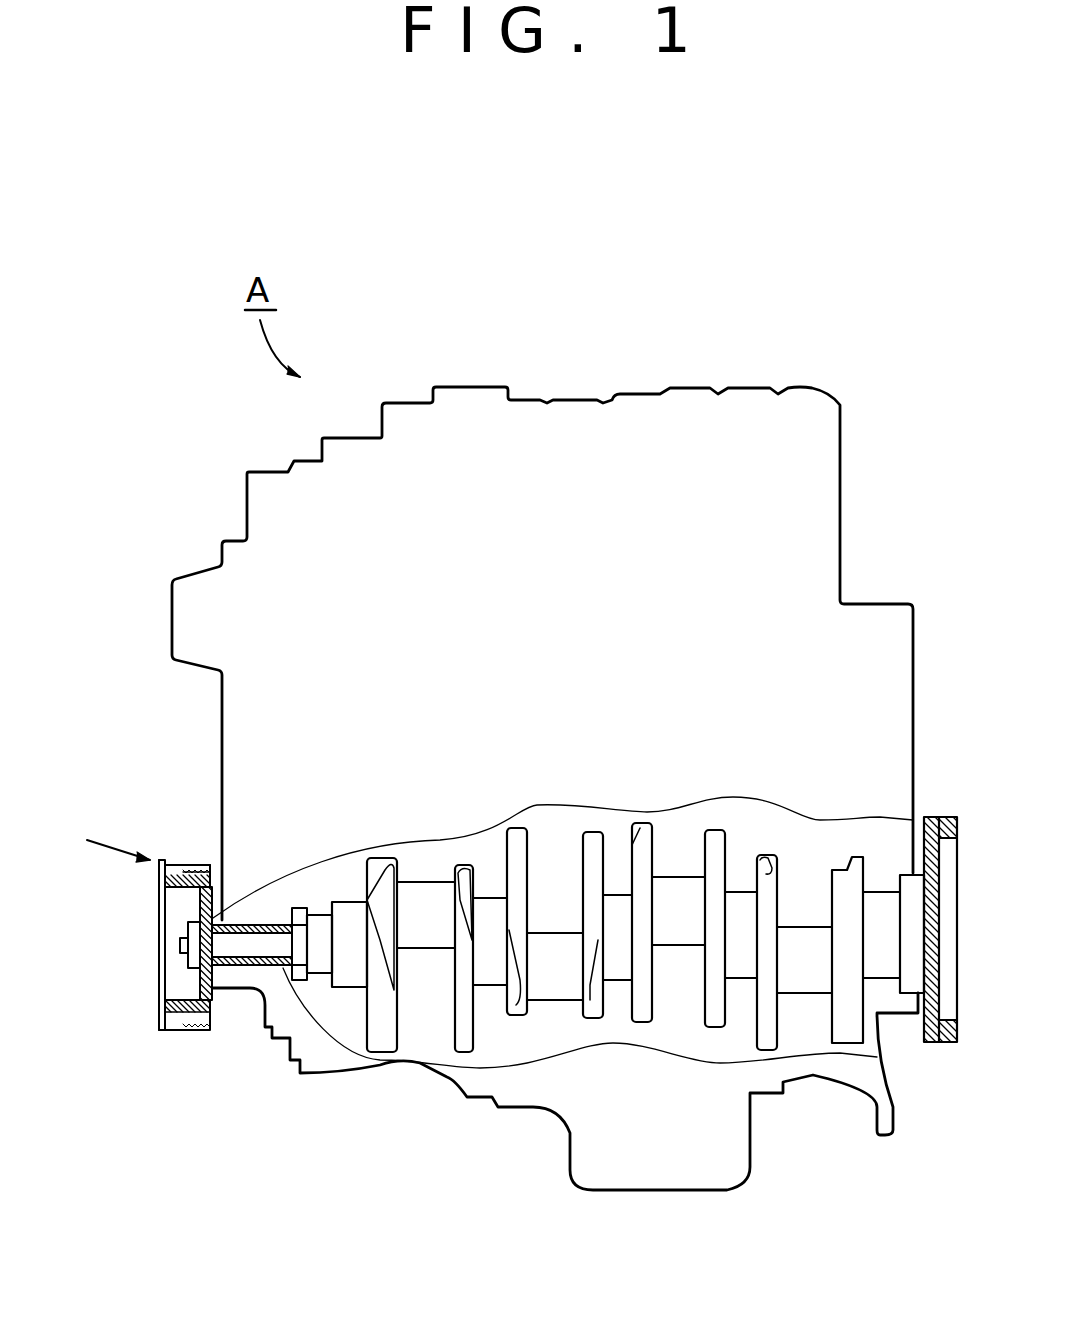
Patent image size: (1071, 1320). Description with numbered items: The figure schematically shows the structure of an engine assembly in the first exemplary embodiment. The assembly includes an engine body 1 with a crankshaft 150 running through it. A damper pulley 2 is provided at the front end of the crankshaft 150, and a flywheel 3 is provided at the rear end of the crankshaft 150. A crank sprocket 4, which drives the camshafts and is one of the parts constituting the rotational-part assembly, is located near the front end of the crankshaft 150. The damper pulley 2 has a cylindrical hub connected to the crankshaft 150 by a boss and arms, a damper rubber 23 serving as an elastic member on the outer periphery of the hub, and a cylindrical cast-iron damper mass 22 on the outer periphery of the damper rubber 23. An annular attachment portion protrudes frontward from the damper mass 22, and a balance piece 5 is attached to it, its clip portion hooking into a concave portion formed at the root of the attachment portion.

The engine body 1 is at (220, 725).
The damper pulley 2 is at (194, 1034).
The flywheel 3 is at (943, 1044).
The crank sprocket 4 is at (300, 978).
The balance piece 5 is at (73, 818).
The damper mass 22 is at (175, 867).
The damper rubber 23 is at (165, 890).
The crankshaft 150 is at (552, 1010).